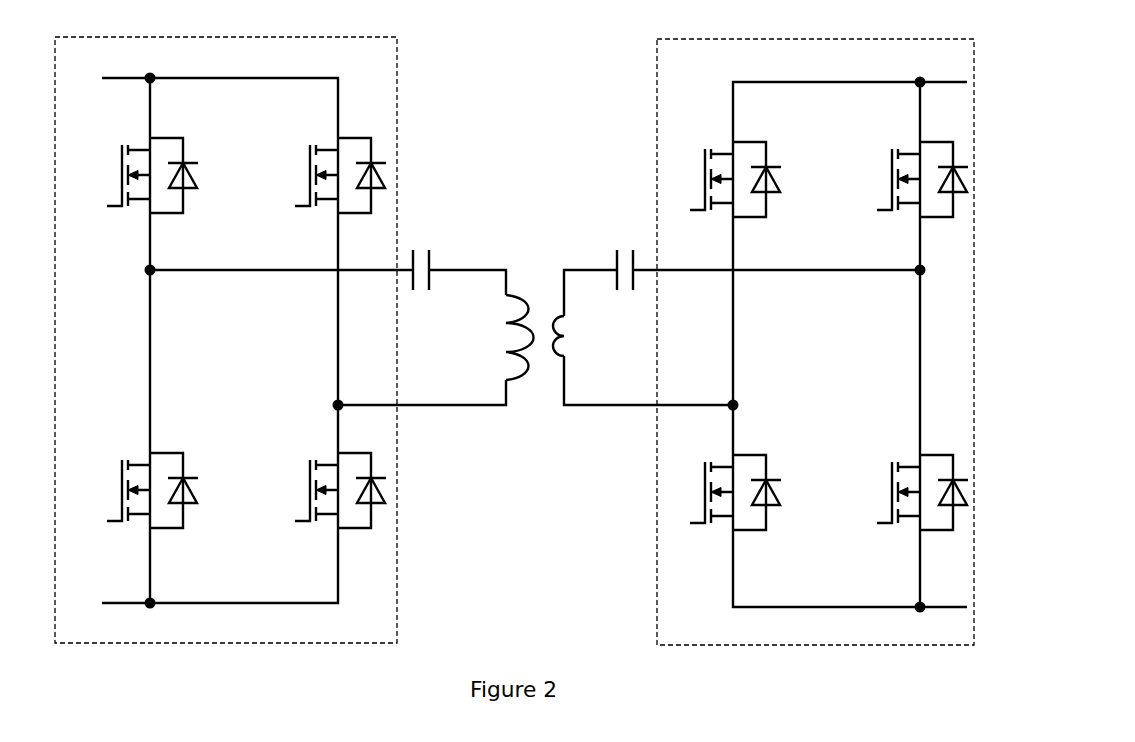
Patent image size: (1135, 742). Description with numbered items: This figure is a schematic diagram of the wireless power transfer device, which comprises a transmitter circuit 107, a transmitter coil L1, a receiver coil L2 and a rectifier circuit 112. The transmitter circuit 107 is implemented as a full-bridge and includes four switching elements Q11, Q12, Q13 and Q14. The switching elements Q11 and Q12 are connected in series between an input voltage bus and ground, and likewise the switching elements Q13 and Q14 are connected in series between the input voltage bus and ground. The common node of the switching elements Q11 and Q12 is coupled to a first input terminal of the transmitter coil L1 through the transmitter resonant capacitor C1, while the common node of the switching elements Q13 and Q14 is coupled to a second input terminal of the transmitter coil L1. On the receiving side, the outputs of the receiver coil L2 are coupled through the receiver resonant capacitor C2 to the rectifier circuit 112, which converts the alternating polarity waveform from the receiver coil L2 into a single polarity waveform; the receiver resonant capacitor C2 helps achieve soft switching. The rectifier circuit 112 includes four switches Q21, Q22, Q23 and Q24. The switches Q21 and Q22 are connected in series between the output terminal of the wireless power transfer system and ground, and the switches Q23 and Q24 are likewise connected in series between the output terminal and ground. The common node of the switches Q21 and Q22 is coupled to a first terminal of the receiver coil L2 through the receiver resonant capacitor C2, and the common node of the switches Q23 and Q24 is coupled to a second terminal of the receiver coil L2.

The transmitter circuit 107 is at (247, 638).
The rectifier circuit 112 is at (854, 638).
The switching element Q11 is at (140, 175).
The switching element Q12 is at (138, 490).
The switching element Q13 is at (326, 175).
The switching element Q14 is at (325, 490).
The switch Q21 is at (723, 179).
The switch Q22 is at (721, 492).
The switch Q23 is at (909, 179).
The switch Q24 is at (909, 492).
The transmitter resonant capacitor C1 is at (420, 255).
The receiver resonant capacitor C2 is at (622, 254).
The transmitter coil L1 is at (502, 337).
The receiver coil L2 is at (576, 336).